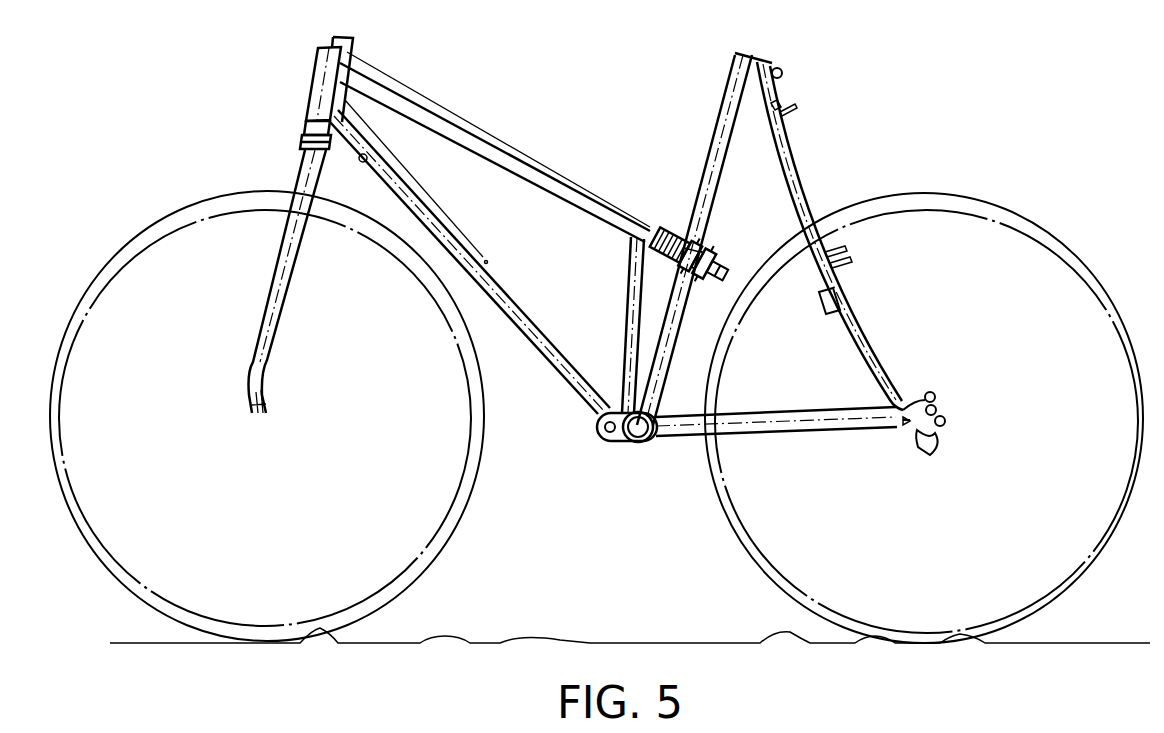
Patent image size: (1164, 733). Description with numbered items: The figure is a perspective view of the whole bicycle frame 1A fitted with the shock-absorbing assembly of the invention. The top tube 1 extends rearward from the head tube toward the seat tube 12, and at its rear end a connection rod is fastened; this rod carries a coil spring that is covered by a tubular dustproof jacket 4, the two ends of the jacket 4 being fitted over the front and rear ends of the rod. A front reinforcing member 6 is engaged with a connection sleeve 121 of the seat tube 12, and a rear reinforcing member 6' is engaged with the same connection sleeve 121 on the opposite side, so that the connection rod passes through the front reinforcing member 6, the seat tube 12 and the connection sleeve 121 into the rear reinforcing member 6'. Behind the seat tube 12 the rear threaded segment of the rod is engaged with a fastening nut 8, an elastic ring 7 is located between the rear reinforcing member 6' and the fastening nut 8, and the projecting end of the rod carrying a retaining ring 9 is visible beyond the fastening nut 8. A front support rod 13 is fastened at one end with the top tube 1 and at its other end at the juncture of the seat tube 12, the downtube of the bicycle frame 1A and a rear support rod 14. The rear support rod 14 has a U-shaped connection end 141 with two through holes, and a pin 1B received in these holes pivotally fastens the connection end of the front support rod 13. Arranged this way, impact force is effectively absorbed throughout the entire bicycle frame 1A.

The top tube 1 is at (553, 180).
The bicycle frame 1A is at (640, 90).
The pin 1B is at (603, 440).
The dustproof jacket 4 is at (663, 230).
The front reinforcing member 6 is at (675, 278).
The rear reinforcing member 6' is at (718, 243).
The elastic ring 7 is at (710, 287).
The fastening nut 8 is at (717, 283).
The bolt 9 is at (717, 262).
The seat tube 12 is at (730, 176).
The connection sleeve 121 is at (693, 227).
The front support rod 13 is at (620, 337).
The rear support rod 14 is at (682, 425).
The U-shaped connection end 141 is at (618, 442).